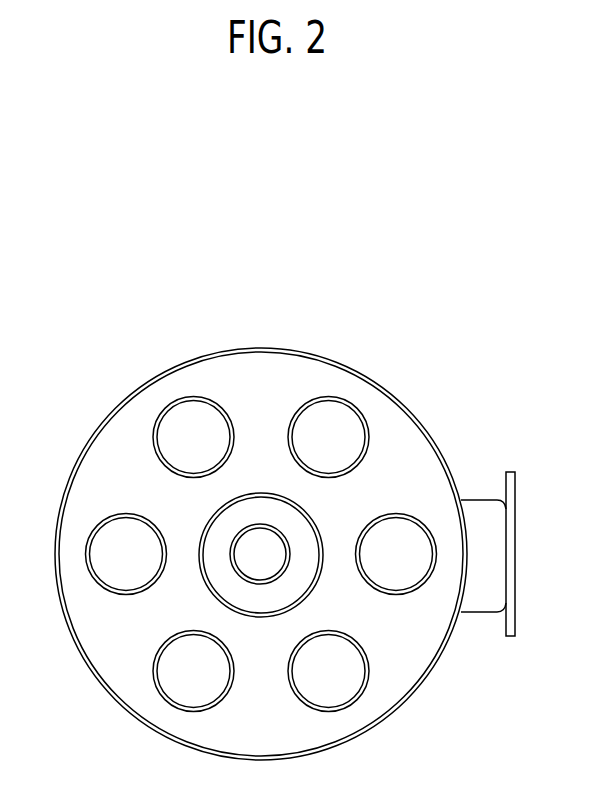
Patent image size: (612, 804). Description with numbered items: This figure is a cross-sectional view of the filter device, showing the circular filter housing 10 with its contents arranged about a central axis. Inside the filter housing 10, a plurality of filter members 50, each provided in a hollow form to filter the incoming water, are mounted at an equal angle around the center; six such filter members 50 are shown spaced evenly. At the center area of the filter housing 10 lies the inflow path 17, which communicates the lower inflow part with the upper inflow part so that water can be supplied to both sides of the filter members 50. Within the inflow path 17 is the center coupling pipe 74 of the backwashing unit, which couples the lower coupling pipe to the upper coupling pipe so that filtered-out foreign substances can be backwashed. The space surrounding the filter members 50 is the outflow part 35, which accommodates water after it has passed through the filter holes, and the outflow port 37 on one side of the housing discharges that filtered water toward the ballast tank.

The filter housing 10 is at (261, 348).
The inflow path 17 is at (296, 553).
The outflow part 35 is at (398, 627).
The outflow port 37 is at (515, 553).
The filter member 50 is at (358, 410).
The center coupling pipe 74 is at (231, 548).